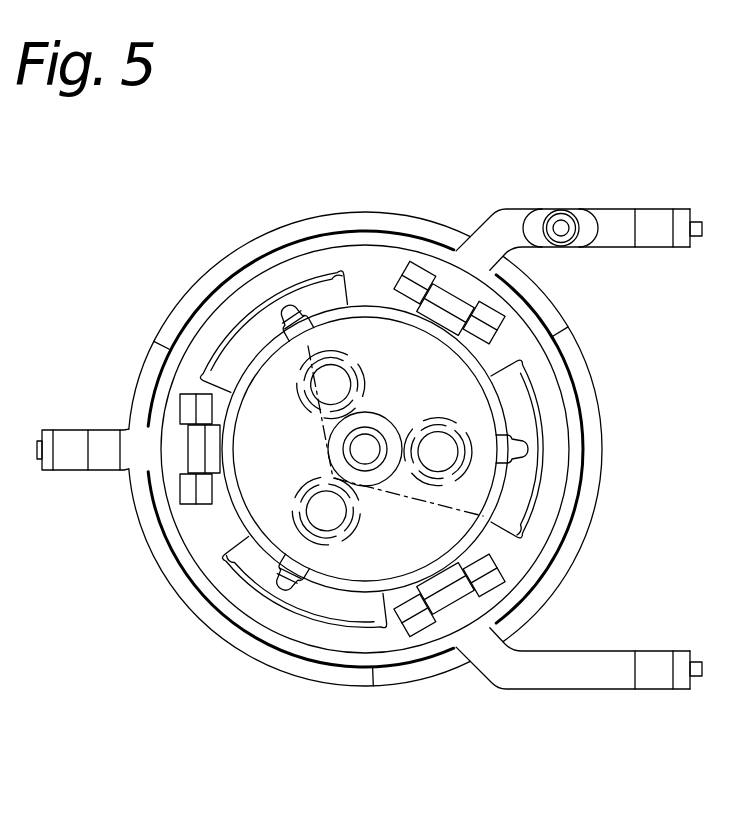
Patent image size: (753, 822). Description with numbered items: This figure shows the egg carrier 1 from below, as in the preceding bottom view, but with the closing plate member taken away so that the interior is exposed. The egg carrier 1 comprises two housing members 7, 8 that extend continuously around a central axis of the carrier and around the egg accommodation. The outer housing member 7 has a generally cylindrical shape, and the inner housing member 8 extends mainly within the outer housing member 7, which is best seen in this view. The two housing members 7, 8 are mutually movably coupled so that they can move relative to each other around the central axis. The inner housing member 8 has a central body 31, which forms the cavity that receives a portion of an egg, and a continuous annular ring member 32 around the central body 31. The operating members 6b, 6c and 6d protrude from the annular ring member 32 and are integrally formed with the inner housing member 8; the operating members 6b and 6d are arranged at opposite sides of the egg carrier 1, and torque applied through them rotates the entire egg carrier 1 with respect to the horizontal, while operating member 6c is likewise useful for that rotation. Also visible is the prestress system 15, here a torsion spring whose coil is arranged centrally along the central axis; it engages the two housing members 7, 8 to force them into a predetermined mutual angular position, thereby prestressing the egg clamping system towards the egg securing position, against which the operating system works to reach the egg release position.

The egg carrier 1 is at (427, 157).
The operating member 6b is at (622, 636).
The operating member 6c is at (632, 198).
The operating member 6d is at (84, 418).
The outer housing member 7 is at (402, 690).
The inner housing member 8 is at (343, 562).
The prestress system 15 is at (313, 343).
The central body 31 is at (272, 510).
The continuous annular ring member 32 is at (163, 548).